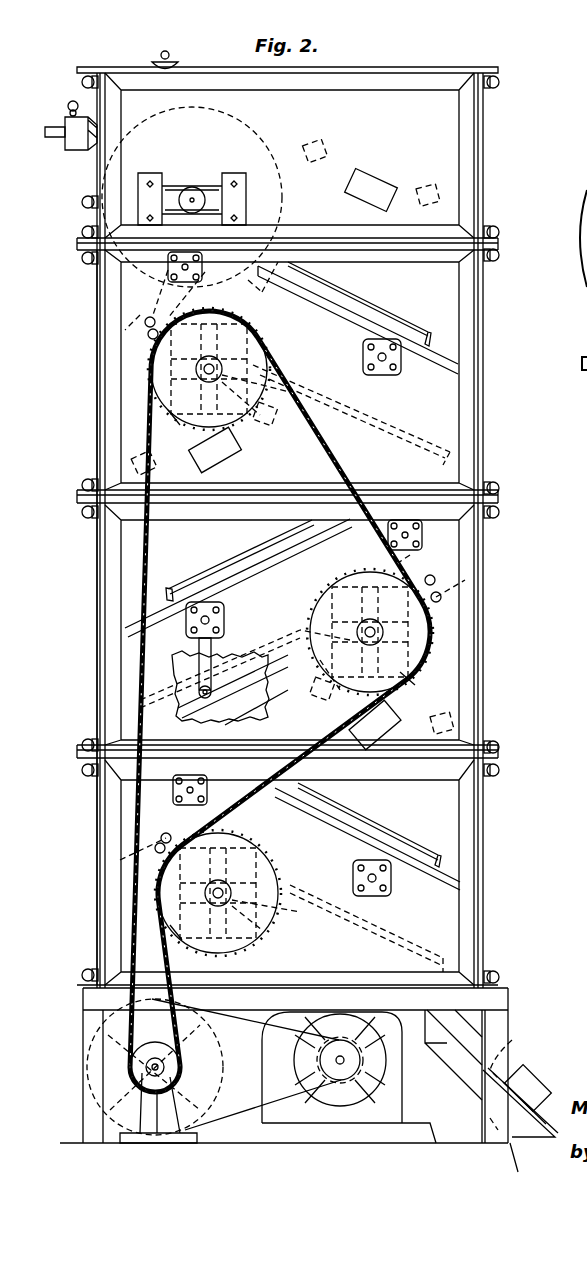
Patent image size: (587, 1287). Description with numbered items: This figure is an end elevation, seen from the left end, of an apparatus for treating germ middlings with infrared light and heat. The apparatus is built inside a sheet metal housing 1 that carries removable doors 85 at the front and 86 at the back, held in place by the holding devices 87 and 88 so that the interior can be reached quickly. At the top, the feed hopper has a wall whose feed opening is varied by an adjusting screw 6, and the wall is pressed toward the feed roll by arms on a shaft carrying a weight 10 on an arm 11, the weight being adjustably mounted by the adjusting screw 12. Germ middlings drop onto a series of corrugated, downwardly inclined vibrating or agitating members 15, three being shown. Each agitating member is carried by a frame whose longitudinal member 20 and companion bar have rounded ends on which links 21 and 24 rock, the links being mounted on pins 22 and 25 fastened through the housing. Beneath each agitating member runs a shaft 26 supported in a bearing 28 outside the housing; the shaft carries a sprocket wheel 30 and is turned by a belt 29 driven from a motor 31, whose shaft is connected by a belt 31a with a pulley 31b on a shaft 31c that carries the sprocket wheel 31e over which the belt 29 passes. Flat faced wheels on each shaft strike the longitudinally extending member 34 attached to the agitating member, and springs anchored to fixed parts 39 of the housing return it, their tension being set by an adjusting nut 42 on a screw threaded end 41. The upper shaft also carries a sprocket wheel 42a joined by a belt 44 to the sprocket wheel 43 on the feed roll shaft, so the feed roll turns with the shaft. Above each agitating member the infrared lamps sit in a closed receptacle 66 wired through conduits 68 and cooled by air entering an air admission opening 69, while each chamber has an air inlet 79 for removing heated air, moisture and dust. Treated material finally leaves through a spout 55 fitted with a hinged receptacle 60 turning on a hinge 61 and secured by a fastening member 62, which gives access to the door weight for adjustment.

The housing 1 is at (413, 113).
The adjusting screw 6 is at (172, 53).
The weight 10 is at (74, 150).
The arm 11 is at (50, 136).
The adjusting screw 12 is at (70, 100).
The vibrating or agitating member 15 is at (334, 393).
The longitudinal member 20 is at (180, 718).
The link 21 is at (410, 555).
The pin 22 is at (185, 265).
The link 24 is at (198, 660).
The pin 25 is at (381, 360).
The shaft 26 is at (196, 370).
The bearing 28 is at (294, 866).
The belt 29 is at (343, 450).
The sprocket wheel 30 is at (152, 357).
The motor 31 is at (392, 1101).
The belt 31a is at (262, 1110).
The pulley 31b is at (210, 1034).
The shaft 31c is at (140, 1066).
The sprocket wheel 31e is at (148, 1040).
The longitudinally extending member 34 is at (262, 362).
The fixed part 39 is at (170, 415).
The screw threaded end 41 is at (150, 322).
The adjusting nut 42 is at (152, 333).
The sprocket wheel 42a is at (178, 306).
The sprocket wheel 43 is at (245, 130).
The belt 44 is at (262, 292).
The spout 55 is at (533, 1132).
The hinged receptacle 60 is at (526, 1080).
The hinge 61 is at (510, 1050).
The fastening member 62 is at (549, 1106).
The closed receptacle 66 is at (270, 708).
The conduit 68 is at (318, 145).
The air admission opening 69 is at (372, 180).
The air inlet 79 is at (365, 312).
The removable door 85 is at (486, 152).
The removable door 86 is at (97, 372).
The holding device 87 is at (497, 86).
The holding device 88 is at (84, 484).